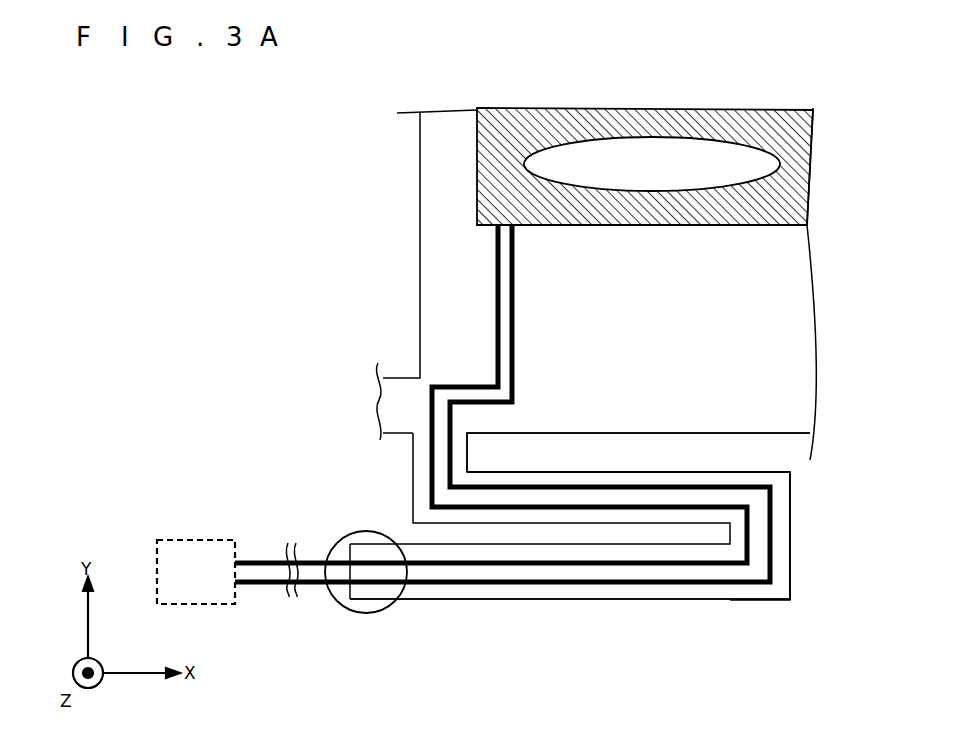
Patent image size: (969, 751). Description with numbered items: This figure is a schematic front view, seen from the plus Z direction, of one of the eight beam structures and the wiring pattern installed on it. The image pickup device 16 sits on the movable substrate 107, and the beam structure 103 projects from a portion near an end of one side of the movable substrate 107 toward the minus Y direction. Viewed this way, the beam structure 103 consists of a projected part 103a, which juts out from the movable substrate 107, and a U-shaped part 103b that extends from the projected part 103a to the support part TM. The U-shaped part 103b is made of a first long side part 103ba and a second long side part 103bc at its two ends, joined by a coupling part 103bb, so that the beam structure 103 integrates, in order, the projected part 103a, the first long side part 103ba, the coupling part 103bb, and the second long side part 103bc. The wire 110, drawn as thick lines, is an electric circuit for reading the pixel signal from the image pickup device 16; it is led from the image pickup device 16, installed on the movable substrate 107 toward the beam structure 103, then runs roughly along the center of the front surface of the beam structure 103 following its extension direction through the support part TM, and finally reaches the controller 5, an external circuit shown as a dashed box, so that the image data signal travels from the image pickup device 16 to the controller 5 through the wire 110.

The movable substrate 107 is at (420, 228).
The image pickup device 16 is at (655, 225).
The wire 110 is at (503, 330).
The beam structure 103 is at (461, 617).
The projected part 103a is at (470, 456).
The U-shaped part 103b is at (763, 606).
The first long side part 103ba is at (628, 471).
The coupling part 103bb is at (792, 539).
The second long side part 103bc is at (583, 600).
The controller 5 is at (196, 540).
The support part TM is at (371, 530).